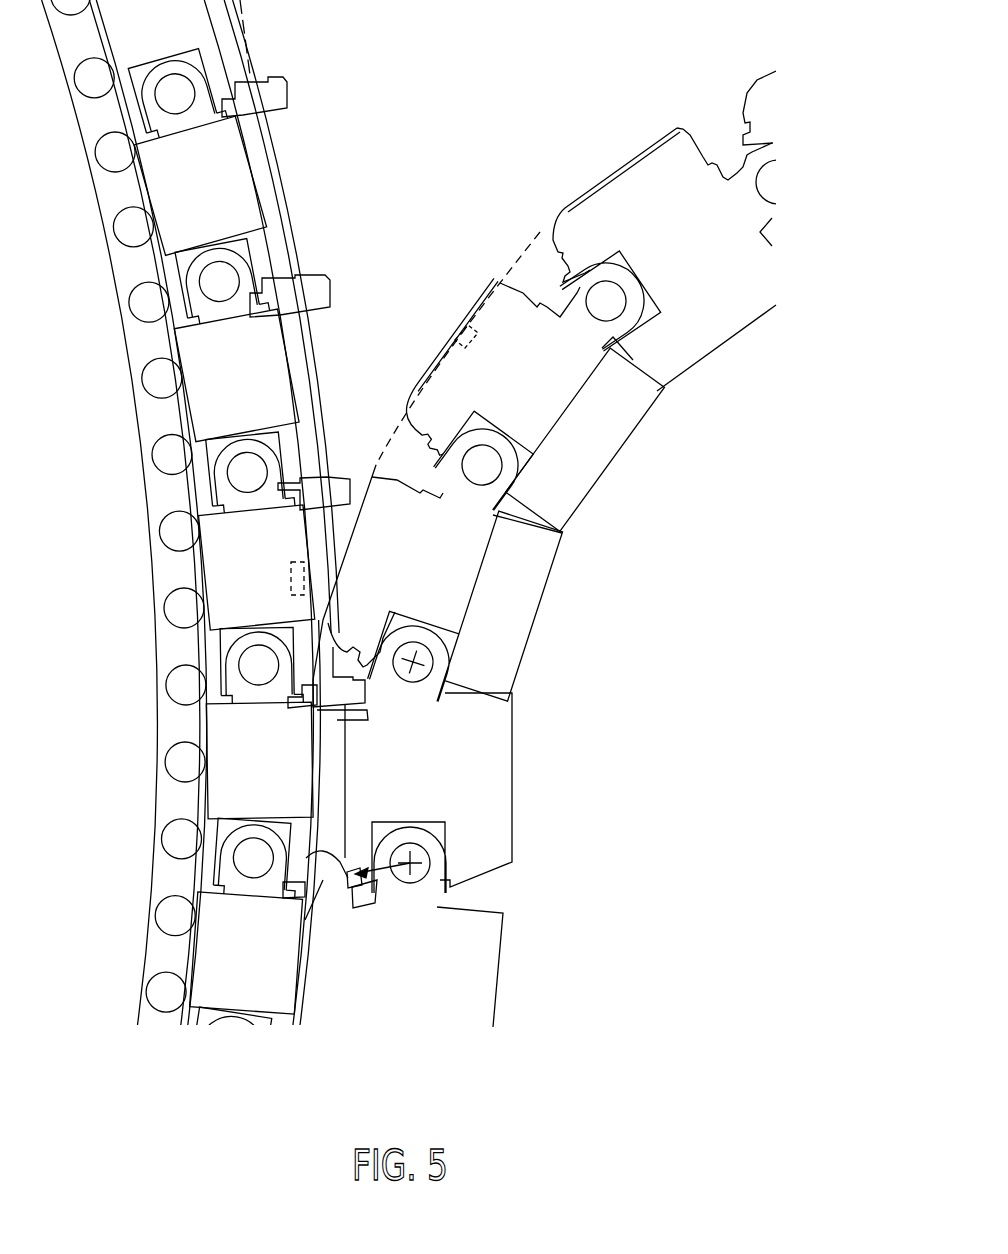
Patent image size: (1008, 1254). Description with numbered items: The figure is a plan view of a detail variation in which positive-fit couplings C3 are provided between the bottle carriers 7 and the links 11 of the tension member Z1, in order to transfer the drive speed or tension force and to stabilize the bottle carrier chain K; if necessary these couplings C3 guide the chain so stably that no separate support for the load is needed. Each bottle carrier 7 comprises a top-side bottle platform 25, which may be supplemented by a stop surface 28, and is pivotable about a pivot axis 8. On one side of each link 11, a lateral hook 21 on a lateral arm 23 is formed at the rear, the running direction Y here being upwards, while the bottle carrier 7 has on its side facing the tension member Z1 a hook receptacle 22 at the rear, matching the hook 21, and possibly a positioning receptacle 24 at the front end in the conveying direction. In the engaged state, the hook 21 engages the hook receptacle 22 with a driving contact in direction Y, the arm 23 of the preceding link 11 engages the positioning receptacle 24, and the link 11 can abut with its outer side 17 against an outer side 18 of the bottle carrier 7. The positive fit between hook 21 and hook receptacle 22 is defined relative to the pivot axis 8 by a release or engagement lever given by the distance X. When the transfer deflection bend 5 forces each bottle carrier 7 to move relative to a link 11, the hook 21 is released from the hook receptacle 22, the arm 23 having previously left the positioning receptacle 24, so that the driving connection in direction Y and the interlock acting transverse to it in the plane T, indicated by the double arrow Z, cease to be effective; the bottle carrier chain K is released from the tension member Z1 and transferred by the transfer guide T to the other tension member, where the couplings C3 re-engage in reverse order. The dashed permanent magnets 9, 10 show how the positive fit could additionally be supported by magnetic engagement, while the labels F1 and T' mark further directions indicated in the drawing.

The conveying direction / force F1 is at (270, 140).
The link 11 is at (267, 348).
The outer side 17 is at (304, 762).
The permanent magnet 9 is at (288, 580).
The tension member Z1 is at (229, 208).
The transverse direction T' is at (387, 214).
The conveyance direction Y is at (342, 410).
The transfer guide T is at (426, 431).
The transfer deflection bend 5 is at (546, 226).
The bottle carrier chain K is at (703, 373).
The stop surface 28 is at (480, 310).
The permanent magnet 10 is at (468, 342).
The pivot axis 8 is at (488, 458).
The bottle platform 25 is at (620, 427).
The bottle carrier 7 is at (588, 472).
The outer side 18 is at (307, 753).
The positioning receptacle 24 is at (353, 713).
The coupling C3 is at (342, 846).
The hook receptacle 22 is at (355, 870).
The lateral hook 21 is at (352, 906).
The lateral arm 23 is at (307, 900).
The distance X is at (387, 883).
The double arrow z Z is at (378, 1007).